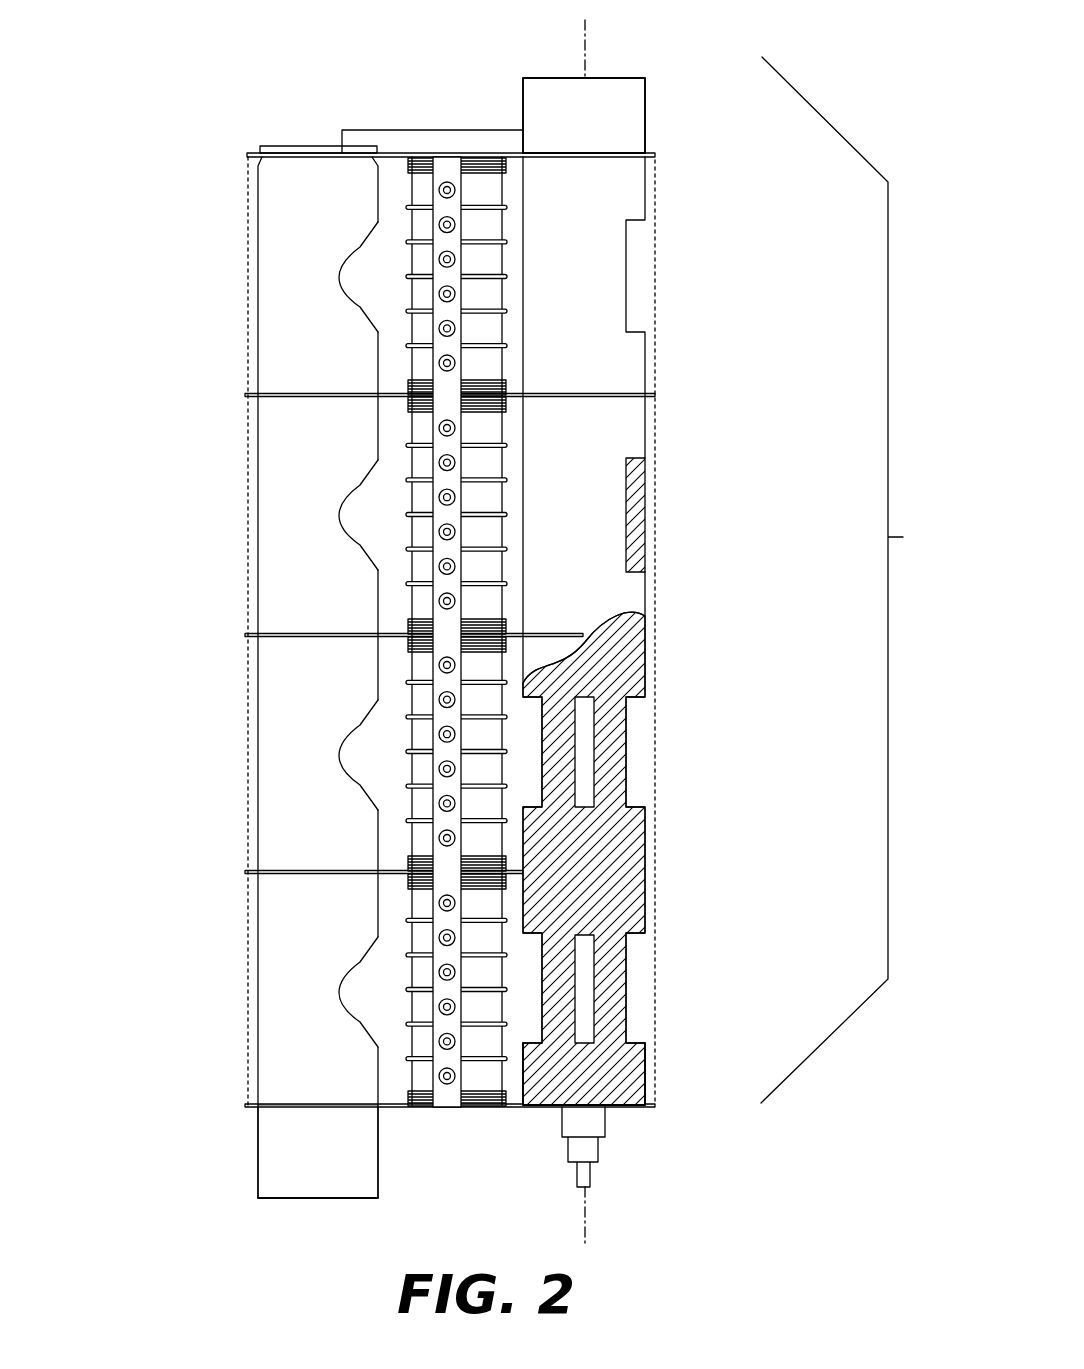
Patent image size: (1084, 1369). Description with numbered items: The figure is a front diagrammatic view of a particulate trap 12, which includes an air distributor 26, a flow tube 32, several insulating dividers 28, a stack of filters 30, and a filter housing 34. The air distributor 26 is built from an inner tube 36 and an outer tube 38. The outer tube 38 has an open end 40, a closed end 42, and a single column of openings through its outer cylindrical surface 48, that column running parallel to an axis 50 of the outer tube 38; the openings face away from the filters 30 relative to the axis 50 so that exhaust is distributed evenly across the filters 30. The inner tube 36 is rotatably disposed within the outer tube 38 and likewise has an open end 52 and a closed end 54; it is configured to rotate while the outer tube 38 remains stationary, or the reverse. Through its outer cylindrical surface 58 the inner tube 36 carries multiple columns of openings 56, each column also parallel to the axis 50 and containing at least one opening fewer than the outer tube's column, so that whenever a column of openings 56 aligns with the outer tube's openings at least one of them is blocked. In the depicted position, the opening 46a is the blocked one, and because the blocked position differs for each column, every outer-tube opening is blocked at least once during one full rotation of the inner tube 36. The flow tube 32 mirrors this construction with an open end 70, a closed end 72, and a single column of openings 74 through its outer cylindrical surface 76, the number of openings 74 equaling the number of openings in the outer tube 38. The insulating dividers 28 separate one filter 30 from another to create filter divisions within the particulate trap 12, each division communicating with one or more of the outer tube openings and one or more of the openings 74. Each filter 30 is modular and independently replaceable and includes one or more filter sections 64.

The particulate trap 12 is at (172, 241).
The air distributor 26 is at (850, 580).
The insulating dividers 28 is at (247, 157).
The filters 30 is at (400, 260).
The flow tube 32 is at (302, 1167).
The filter housing 34 is at (247, 323).
The inner tube 36 is at (518, 1077).
The outer tube 38 is at (630, 193).
The open end 40 is at (523, 78).
The open end 52 is at (584, 115).
The closed end 42 is at (650, 1093).
The closed end 54 is at (584, 1074).
The opening 46a is at (664, 510).
The outer cylindrical surface 48 is at (600, 100).
The axis 50 is at (585, 26).
The openings 56 is at (536, 1060).
The outer cylindrical surface 58 is at (602, 848).
The filter sections 64 is at (478, 260).
The open end 70 is at (318, 1202).
The closed end 72 is at (305, 146).
The openings 74 is at (366, 248).
The outer cylindrical surface 76 is at (272, 530).